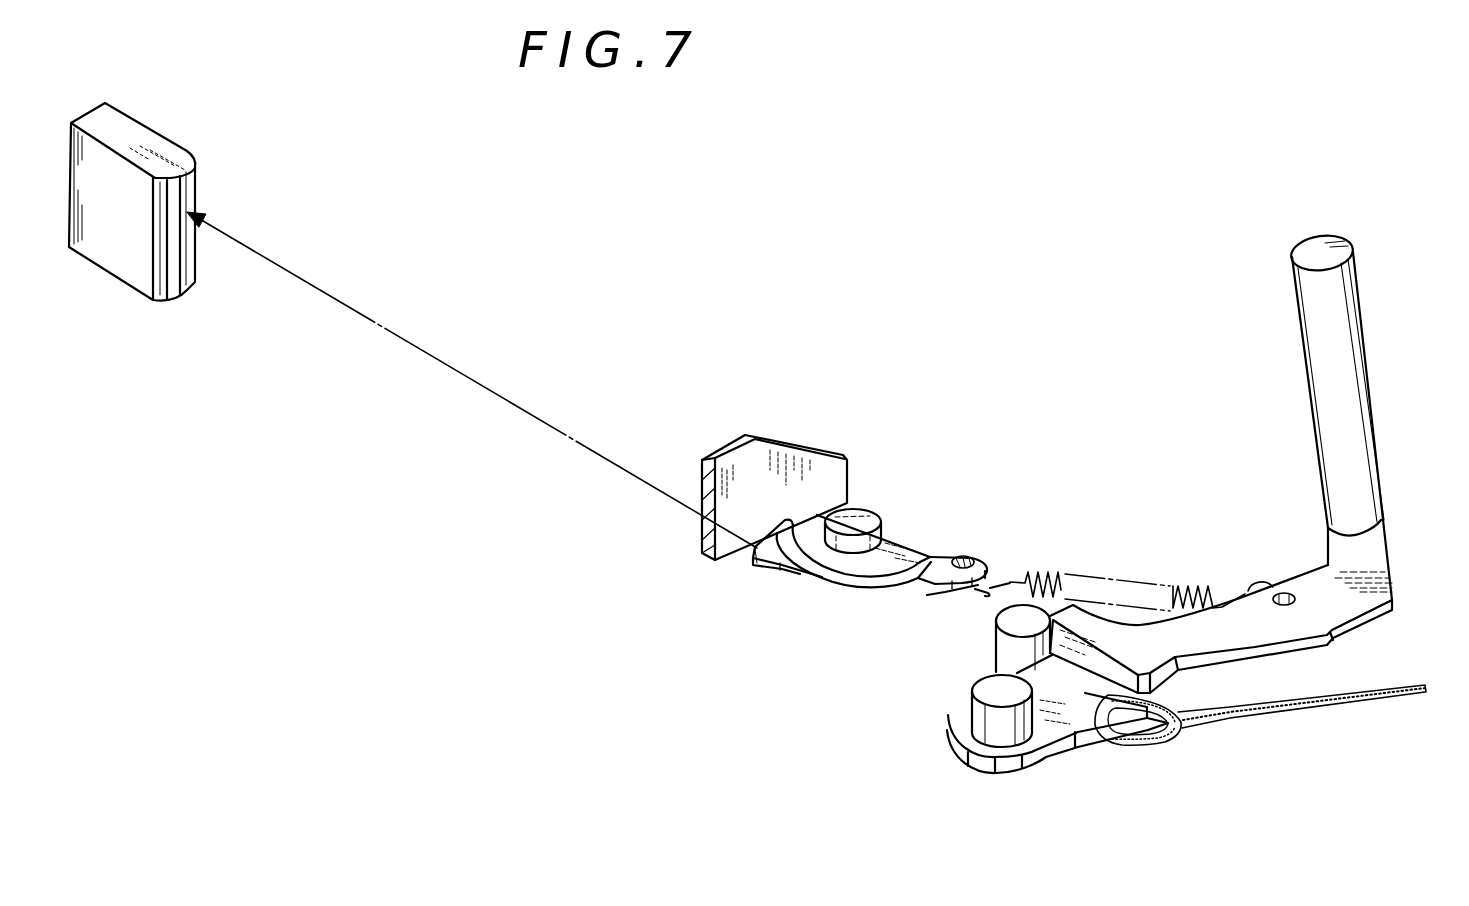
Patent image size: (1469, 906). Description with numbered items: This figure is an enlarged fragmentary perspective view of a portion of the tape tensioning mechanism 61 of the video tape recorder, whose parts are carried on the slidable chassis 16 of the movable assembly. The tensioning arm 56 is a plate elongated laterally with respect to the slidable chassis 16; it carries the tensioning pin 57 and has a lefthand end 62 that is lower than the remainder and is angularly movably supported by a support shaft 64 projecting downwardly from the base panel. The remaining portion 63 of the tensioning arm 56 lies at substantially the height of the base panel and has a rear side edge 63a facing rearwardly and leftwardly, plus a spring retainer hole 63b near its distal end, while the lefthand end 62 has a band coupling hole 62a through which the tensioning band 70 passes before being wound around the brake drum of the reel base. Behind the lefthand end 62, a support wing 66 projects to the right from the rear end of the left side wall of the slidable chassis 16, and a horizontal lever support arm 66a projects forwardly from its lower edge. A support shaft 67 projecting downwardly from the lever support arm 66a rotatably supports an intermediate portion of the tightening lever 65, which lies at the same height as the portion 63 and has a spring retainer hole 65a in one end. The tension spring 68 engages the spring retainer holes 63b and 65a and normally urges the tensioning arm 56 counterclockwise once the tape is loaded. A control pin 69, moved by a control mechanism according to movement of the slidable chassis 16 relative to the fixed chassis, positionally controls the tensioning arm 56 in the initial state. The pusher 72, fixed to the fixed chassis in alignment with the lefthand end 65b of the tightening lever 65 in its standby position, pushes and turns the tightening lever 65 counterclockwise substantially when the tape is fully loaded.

The slidable chassis 16 is at (723, 447).
The tensioning arm 56 is at (948, 716).
The tensioning pin 57 is at (1313, 304).
The tape tensioning mechanism 61 is at (604, 635).
The lefthand end 62 is at (1026, 661).
The band coupling hole 62a is at (1112, 700).
The portion 63 is at (1312, 590).
The rear side edge 63a is at (1046, 643).
The spring retainer hole 63b is at (1298, 591).
The support shaft 64 is at (992, 730).
The tightening lever 65 is at (962, 545).
The spring retainer hole 65a is at (976, 554).
The lefthand end 65b is at (757, 568).
The support wing 66 is at (778, 482).
The lever support arm 66a is at (898, 548).
The support shaft 67 is at (863, 515).
The tension spring 68 is at (1062, 595).
The control pin 69 is at (1000, 608).
The tensioning band 70 is at (1312, 712).
The pusher 72 is at (113, 262).